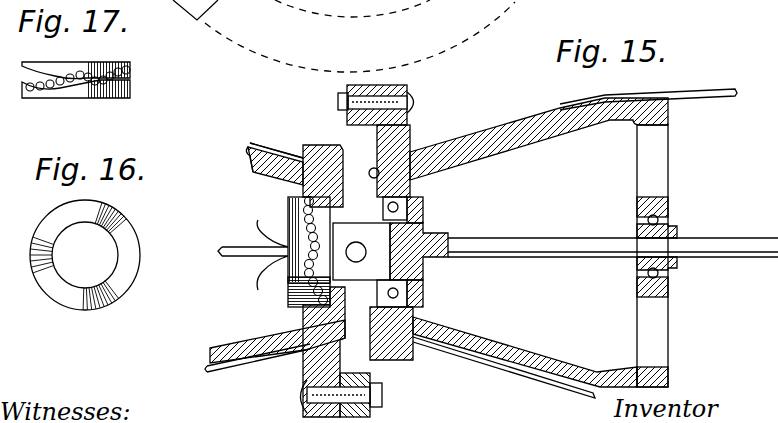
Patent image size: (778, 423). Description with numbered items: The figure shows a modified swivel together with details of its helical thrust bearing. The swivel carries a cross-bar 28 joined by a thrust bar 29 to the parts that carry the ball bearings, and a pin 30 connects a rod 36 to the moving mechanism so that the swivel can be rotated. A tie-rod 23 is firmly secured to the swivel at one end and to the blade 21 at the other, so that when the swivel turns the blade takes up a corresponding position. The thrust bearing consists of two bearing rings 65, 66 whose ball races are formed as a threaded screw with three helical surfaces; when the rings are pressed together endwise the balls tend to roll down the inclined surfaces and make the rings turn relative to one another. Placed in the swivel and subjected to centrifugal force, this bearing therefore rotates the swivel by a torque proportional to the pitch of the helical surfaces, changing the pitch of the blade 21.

In FIG. 17, the blade 21 is at (184, 18).
In FIG. 15, the tie-rod 23 is at (727, 95).
In FIG. 15, the cross-bar 28 is at (665, 157).
In FIG. 15, the thrust bar 29 is at (552, 137).
In FIG. 15, the pin 30 is at (340, 100).
In FIG. 15, the rod 36 is at (346, 125).
In FIG. 17, the bearing ring 65 is at (128, 92).
In FIG. 15, the bearing ring 65 is at (390, 216).
In FIG. 17, the bearing ring 66 is at (130, 66).
In FIG. 16, the bearing ring 66 is at (101, 255).
In FIG. 15, the bearing ring 66 is at (425, 204).